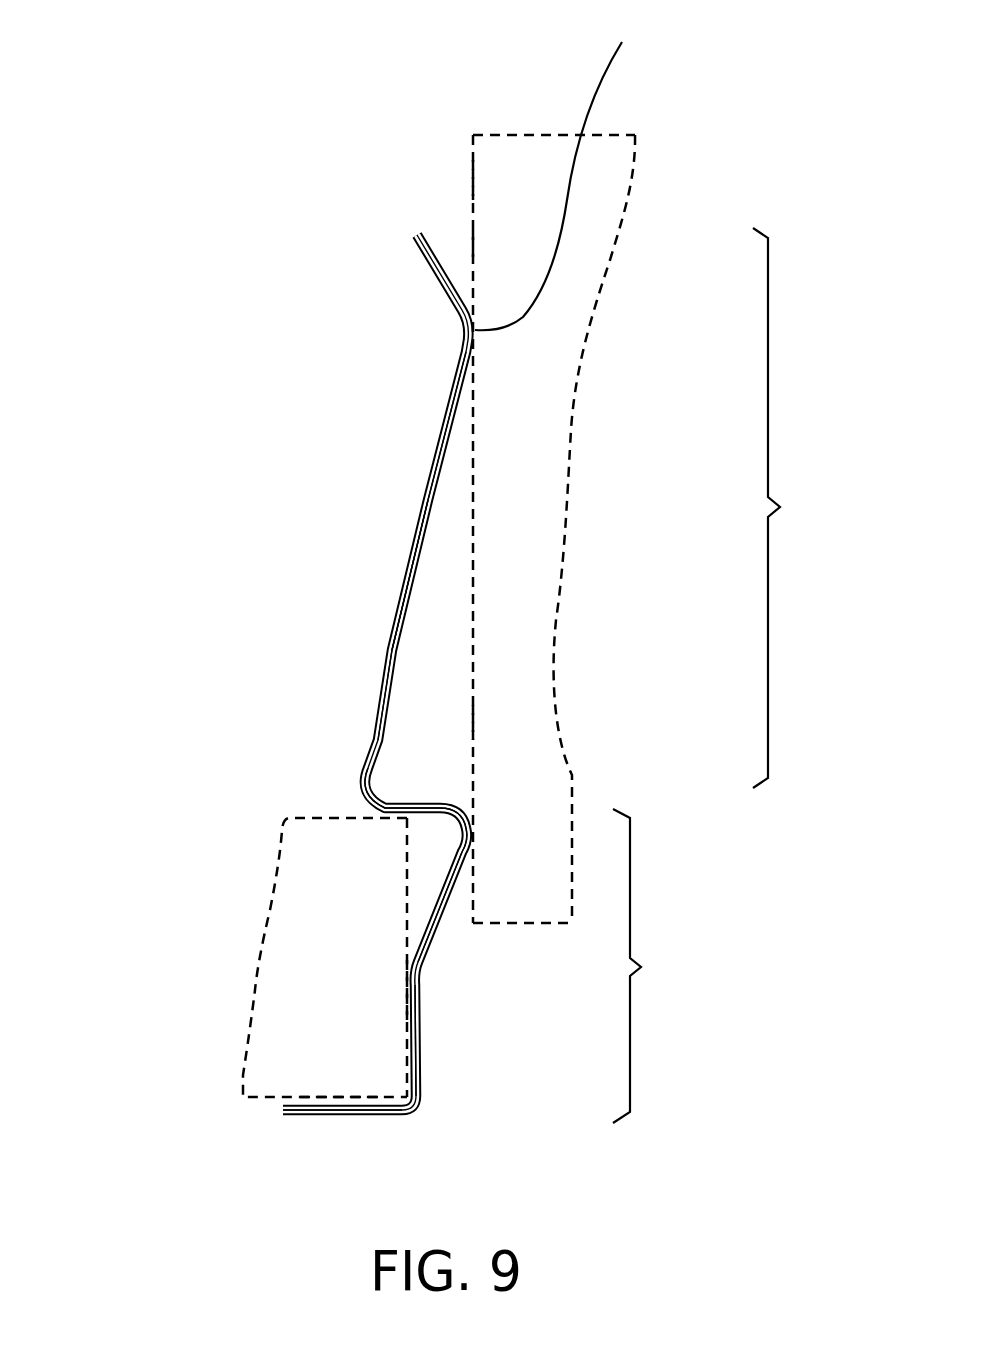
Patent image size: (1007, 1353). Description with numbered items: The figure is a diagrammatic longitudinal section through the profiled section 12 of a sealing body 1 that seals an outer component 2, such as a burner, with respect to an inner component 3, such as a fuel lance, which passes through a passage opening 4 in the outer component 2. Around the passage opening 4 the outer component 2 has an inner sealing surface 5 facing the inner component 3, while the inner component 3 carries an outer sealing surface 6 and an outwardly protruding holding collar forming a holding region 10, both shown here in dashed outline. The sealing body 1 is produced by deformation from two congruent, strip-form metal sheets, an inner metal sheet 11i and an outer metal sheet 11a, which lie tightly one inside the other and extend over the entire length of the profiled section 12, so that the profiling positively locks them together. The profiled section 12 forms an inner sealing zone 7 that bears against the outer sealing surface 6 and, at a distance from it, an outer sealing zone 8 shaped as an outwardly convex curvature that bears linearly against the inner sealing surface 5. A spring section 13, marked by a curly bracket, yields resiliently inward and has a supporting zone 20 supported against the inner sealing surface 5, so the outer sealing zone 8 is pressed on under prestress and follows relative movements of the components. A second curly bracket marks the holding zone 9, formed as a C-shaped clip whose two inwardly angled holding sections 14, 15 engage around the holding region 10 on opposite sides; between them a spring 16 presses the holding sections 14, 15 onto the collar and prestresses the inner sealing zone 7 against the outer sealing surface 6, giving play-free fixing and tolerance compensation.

The sealing body 1 is at (412, 497).
The outer component 2 is at (536, 120).
The inner component 3 is at (268, 865).
The passage opening 4 is at (458, 174).
The inner sealing surface 5 is at (470, 245).
The outer sealing surface 6 is at (393, 988).
The inner sealing zone 7 is at (407, 1030).
The outer sealing zone 8 is at (473, 835).
The holding zone 9 is at (640, 966).
The holding region 10 is at (355, 935).
The inner metal sheet 11i is at (397, 600).
The outer metal sheet 11a is at (403, 647).
The profiled section 12 is at (611, 397).
The spring section 13 is at (785, 508).
The holding section 14 is at (345, 1112).
The holding section 15 is at (388, 800).
The spring 16 is at (443, 920).
The supporting zone 20 is at (570, 175).